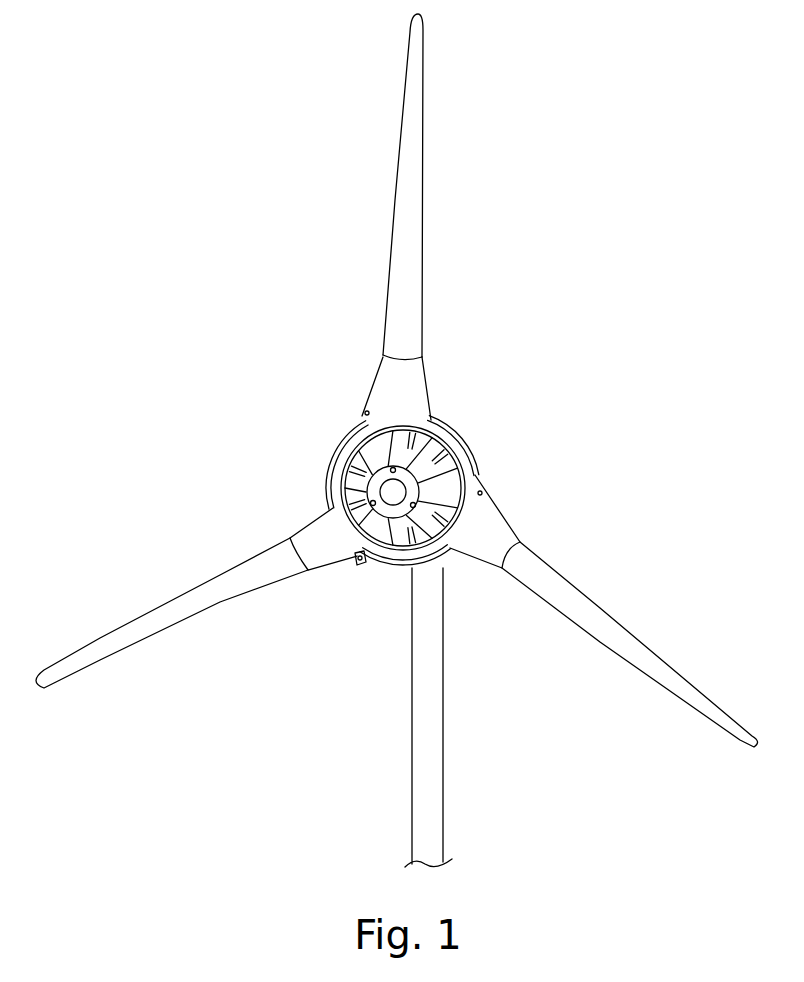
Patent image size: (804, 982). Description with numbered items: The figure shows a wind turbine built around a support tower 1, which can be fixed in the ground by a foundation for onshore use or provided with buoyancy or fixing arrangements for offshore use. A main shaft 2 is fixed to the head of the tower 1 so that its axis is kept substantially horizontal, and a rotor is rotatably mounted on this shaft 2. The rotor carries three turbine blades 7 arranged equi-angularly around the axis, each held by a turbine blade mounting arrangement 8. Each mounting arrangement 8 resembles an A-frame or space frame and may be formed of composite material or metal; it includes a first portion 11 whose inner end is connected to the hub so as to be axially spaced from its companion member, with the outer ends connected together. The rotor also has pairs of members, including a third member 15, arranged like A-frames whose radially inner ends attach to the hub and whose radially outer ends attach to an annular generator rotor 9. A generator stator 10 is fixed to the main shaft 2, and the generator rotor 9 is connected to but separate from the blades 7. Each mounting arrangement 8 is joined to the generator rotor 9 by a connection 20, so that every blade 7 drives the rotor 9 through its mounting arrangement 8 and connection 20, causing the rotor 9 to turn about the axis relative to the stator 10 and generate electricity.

The support tower 1 is at (428, 761).
The main shaft 2 is at (388, 490).
The turbine blade 7 is at (408, 283).
The turbine blade mounting arrangement 8 is at (412, 393).
The generator rotor 9 is at (438, 432).
The generator stator 10 is at (447, 475).
The first portion 11 is at (392, 432).
The third member 15 is at (342, 480).
The connection 20 is at (362, 566).